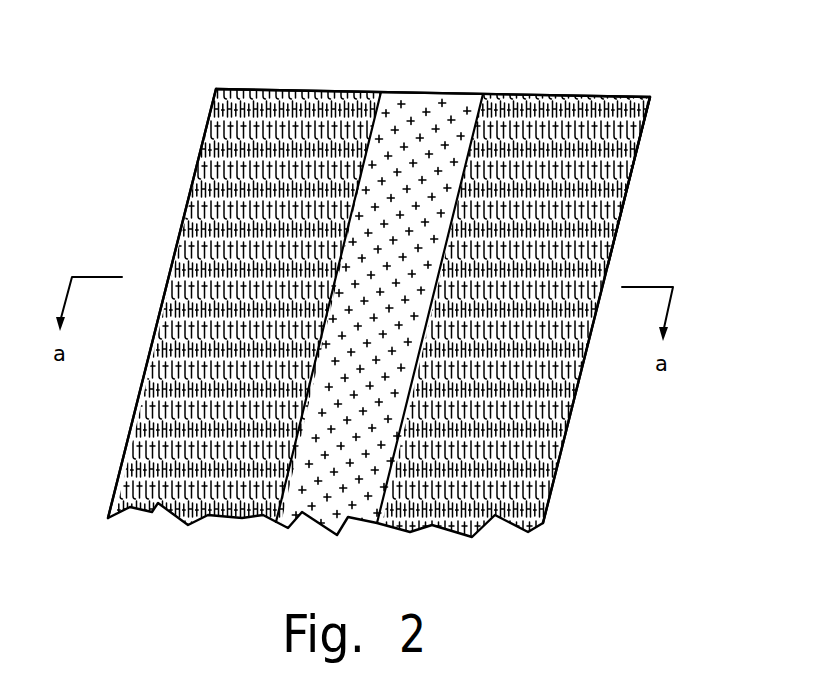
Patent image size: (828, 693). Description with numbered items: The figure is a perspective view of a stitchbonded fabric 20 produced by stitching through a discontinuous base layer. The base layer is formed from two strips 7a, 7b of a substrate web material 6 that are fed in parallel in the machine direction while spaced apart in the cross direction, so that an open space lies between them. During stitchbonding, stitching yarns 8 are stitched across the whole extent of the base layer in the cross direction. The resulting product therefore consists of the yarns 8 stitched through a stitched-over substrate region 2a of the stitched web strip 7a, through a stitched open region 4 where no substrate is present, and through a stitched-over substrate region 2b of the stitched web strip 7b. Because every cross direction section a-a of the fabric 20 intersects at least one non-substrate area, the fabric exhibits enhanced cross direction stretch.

The stitchbonded fabric 20 is at (533, 77).
The stitched-over substrate region 2a is at (228, 205).
The stitched-over substrate region 2b is at (607, 130).
The stitched open region 4 is at (402, 147).
The substrate web material 6 is at (260, 90).
The stitching yarns 8 is at (449, 110).
The web strip 7a is at (128, 435).
The web strip 7b is at (552, 508).